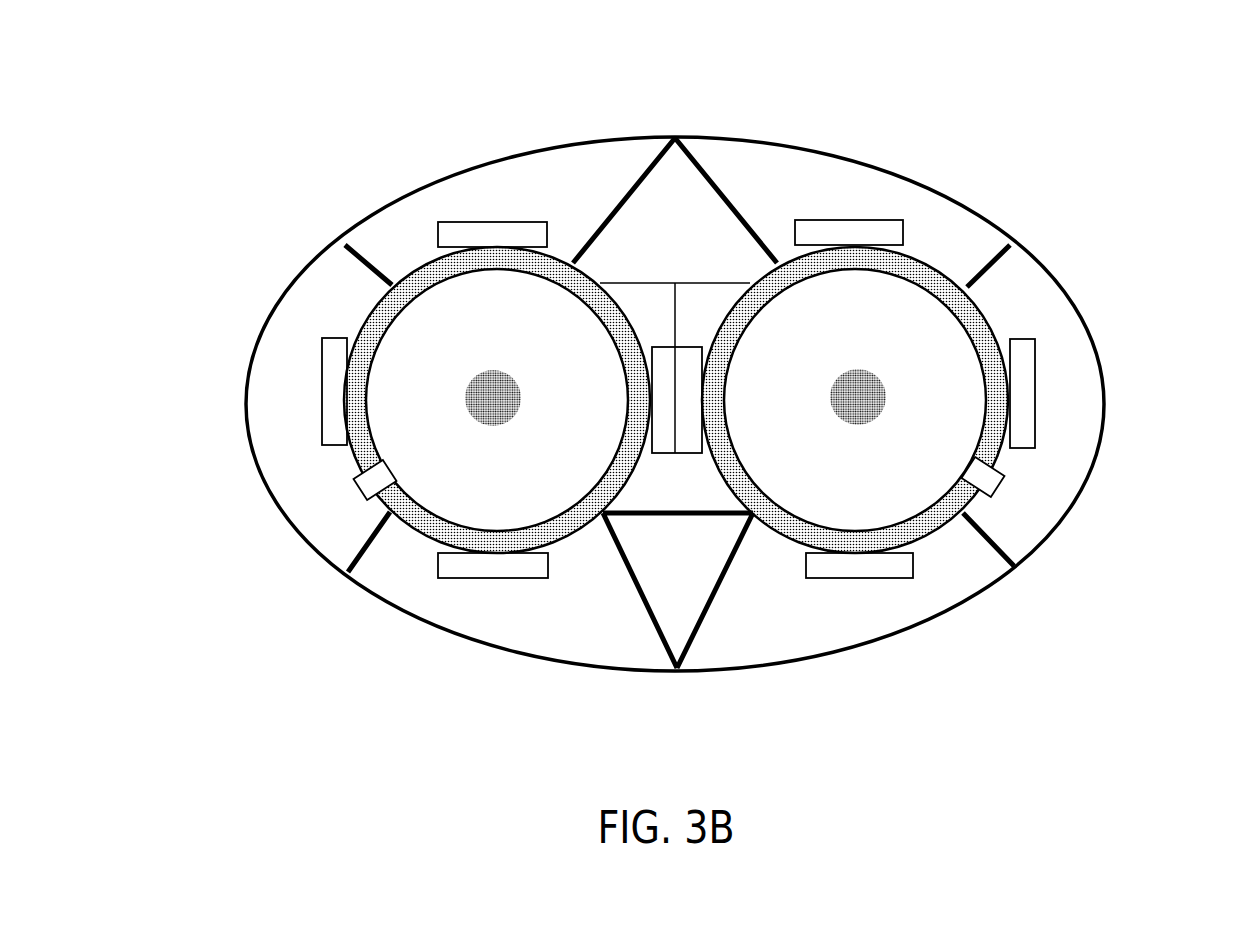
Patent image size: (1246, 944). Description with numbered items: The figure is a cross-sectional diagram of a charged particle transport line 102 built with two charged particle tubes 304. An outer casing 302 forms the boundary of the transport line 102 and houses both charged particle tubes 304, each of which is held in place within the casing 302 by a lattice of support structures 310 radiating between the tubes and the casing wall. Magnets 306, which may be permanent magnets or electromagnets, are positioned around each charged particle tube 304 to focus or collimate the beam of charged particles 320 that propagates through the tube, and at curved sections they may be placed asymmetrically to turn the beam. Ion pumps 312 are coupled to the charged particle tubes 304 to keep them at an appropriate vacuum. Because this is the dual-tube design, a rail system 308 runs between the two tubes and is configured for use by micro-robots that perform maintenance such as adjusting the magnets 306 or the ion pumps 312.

The charged particle transport line 102 is at (1113, 120).
The outer casing 302 is at (318, 253).
The charged particle tube 304 is at (412, 270).
The magnets 306 is at (487, 223).
The rail system 308 is at (723, 285).
The support structures 310 is at (372, 265).
The ion pumps 312 is at (362, 490).
The beam of charged particles 320 is at (505, 361).